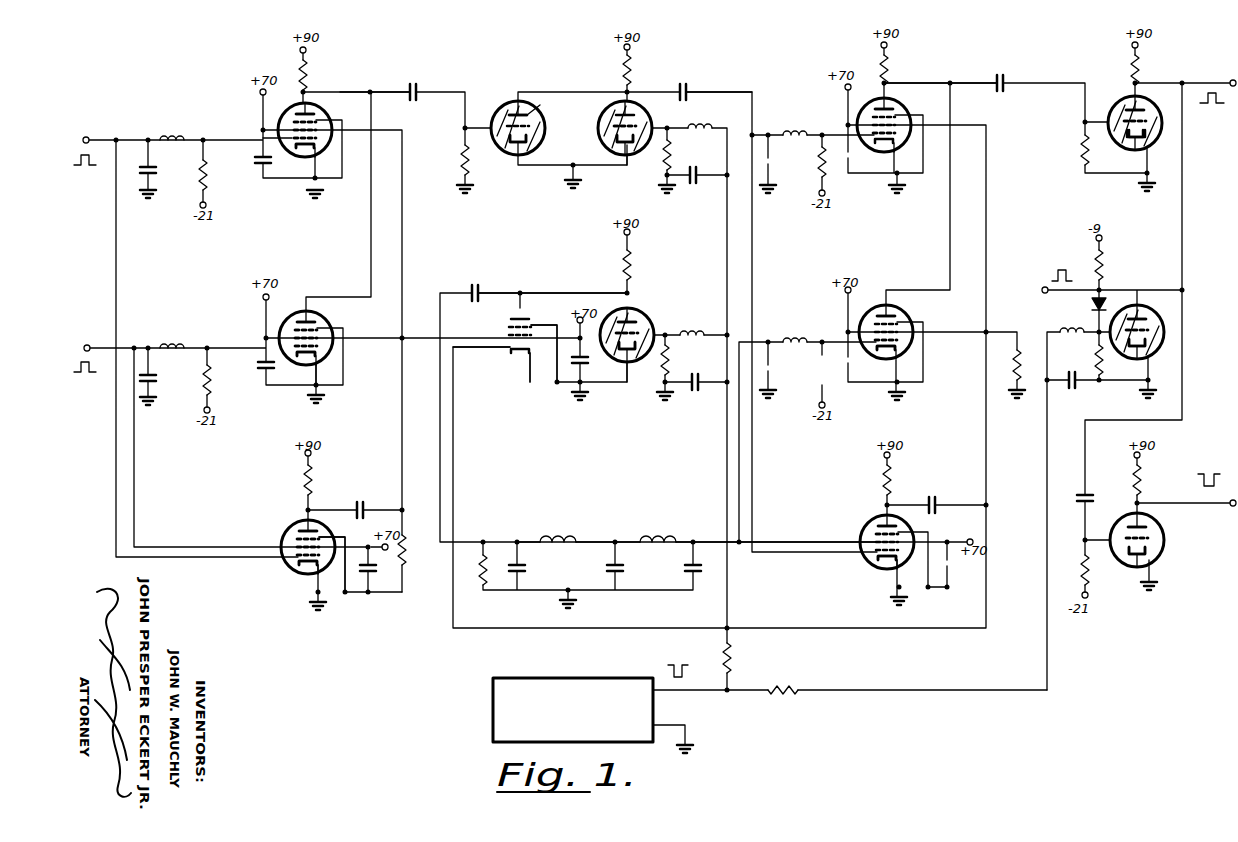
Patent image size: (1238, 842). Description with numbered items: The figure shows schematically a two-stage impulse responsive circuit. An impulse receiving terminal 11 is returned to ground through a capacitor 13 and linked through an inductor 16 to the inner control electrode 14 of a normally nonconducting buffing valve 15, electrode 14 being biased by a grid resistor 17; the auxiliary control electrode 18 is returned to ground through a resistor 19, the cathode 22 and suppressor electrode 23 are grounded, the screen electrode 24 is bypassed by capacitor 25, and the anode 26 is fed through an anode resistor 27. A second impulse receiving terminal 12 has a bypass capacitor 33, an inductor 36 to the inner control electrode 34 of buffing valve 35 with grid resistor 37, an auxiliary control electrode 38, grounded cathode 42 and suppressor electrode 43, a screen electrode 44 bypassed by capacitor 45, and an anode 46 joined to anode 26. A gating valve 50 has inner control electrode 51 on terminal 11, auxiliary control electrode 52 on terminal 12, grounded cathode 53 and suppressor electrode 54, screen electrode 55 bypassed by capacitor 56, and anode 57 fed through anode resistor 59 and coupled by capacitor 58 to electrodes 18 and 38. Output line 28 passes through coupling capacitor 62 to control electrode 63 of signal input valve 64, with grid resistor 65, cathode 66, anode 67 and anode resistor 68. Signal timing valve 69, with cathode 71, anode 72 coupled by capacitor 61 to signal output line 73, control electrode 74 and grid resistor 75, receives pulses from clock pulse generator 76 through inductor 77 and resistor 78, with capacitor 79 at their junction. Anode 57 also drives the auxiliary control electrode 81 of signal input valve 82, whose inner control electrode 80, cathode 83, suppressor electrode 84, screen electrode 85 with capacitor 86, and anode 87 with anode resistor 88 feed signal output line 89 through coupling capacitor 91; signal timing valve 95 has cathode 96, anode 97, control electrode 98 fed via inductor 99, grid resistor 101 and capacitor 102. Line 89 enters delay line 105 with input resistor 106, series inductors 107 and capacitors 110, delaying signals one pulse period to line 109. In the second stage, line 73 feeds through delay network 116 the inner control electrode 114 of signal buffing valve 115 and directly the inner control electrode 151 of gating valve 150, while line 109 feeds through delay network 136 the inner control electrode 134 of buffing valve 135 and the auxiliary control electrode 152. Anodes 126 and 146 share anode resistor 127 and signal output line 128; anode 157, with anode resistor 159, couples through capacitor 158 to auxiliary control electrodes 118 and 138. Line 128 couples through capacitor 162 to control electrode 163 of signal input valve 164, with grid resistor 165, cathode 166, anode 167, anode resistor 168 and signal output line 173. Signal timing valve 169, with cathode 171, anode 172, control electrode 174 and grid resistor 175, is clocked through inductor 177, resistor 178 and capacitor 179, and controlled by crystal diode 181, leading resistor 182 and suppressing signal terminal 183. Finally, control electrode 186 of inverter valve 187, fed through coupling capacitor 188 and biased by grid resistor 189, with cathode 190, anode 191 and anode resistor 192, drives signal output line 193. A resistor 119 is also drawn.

The impulse receiving terminal 11 is at (89, 135).
The impulse receiving terminal 12 is at (94, 340).
The capacitor 13 is at (156, 175).
The inner control electrode 14 is at (284, 146).
The buffing valve 15 is at (299, 103).
The inductor 16 is at (176, 135).
The grid resistor 17 is at (207, 166).
The auxiliary control electrode 18 is at (314, 142).
The resistor 19 is at (409, 560).
The cathode 22 is at (303, 158).
The suppressor electrode 23 is at (322, 121).
The screen electrode 24 is at (287, 119).
The bypass capacitor 25 is at (262, 170).
The anode 26 is at (313, 113).
The anode resistor 27 is at (311, 66).
The output line 28 is at (371, 91).
The bypass capacitor 33 is at (156, 392).
The inner control electrode 34 is at (291, 360).
The buffing valve 35 is at (301, 310).
The inductor 36 is at (176, 343).
The grid resistor 37 is at (211, 390).
The auxiliary control electrode 38 is at (316, 350).
The cathode 42 is at (312, 364).
The suppressor electrode 43 is at (331, 323).
The screen electrode 44 is at (291, 325).
The bypass capacitor 45 is at (262, 361).
The anode 46 is at (313, 318).
The gating valve 50 is at (286, 526).
The inner control electrode 51 is at (286, 561).
The auxiliary control electrode 52 is at (286, 540).
The cathode 53 is at (303, 576).
The suppressor electrode 54 is at (321, 536).
The screen electrode 55 is at (326, 553).
The bypass capacitor 56 is at (371, 578).
The anode 57 is at (301, 521).
The coupling capacitor 58 is at (366, 505).
The anode resistor 59 is at (313, 480).
The coupling capacitor 61 is at (690, 82).
The coupling capacitor 62 is at (419, 86).
The control electrode 63 is at (498, 112).
The signal input valve 64 is at (540, 115).
The grid resistor 65 is at (470, 168).
The cathode 66 is at (525, 160).
The anode 67 is at (518, 105).
The anode resistor 68 is at (636, 67).
The signal timing valve 69 is at (641, 118).
The cathode 71 is at (626, 158).
The anode 72 is at (603, 124).
The signal output line 73 is at (714, 90).
The control electrode 74 is at (639, 146).
The grid resistor 75 is at (673, 155).
The clock pulse generator 76 is at (595, 677).
The inductor 77 is at (701, 124).
The resistor 78 is at (736, 656).
The capacitor 79 is at (695, 185).
The inner control electrode 80 is at (505, 347).
The auxiliary control electrode 81 is at (501, 333).
The signal input valve 82 is at (506, 360).
The cathode 83 is at (524, 360).
The suppressor electrode 84 is at (536, 322).
The screen electrode 85 is at (541, 346).
The coupling capacitor 86 is at (586, 365).
The anode 87 is at (512, 325).
The anode resistor 88 is at (632, 265).
The signal output line 89 is at (446, 293).
The coupling capacitor 91 is at (483, 288).
The signal timing valve 95 is at (651, 320).
The cathode 96 is at (630, 366).
The anode 97 is at (636, 315).
The control electrode 98 is at (640, 360).
The inductor 99 is at (696, 333).
The grid resistor 101 is at (672, 362).
The capacitor 102 is at (698, 392).
The delay line 105 is at (585, 528).
The input resistor 106 is at (481, 580).
The series inductors 107 is at (652, 537).
The line 109 is at (701, 540).
The capacitors 110 is at (528, 574).
The inner control electrode 114 is at (852, 152).
The signal buffing valve 115 is at (869, 110).
The delay network 116 is at (810, 125).
The auxiliary control electrode 118 is at (900, 137).
The resistor 119 is at (1017, 345).
The anode 126 is at (899, 106).
The anode resistor 127 is at (892, 66).
The signal output line 128 is at (956, 82).
The inner control electrode 134 is at (866, 352).
The buffing valve 135 is at (871, 316).
The delay network 136 is at (813, 326).
The auxiliary control electrode 138 is at (900, 346).
The anode 146 is at (902, 313).
The gating valve 150 is at (873, 515).
The inner control electrode 151 is at (876, 557).
The auxiliary control electrode 152 is at (871, 535).
The anode 157 is at (906, 523).
The coupling capacitor 158 is at (938, 500).
The anode resistor 159 is at (893, 476).
The coupling capacitor 162 is at (1004, 82).
The control electrode 163 is at (1115, 115).
The signal input valve 164 is at (1143, 141).
The grid resistor 165 is at (1083, 146).
The cathode 166 is at (1129, 148).
The anode 167 is at (1125, 100).
The anode resistor 168 is at (1143, 66).
The signal timing valve 169 is at (1157, 311).
The cathode 171 is at (1130, 355).
The anode 172 is at (1137, 300).
The signal output line 173 is at (1202, 82).
The control electrode 174 is at (1116, 310).
The grid resistor 175 is at (1093, 362).
The inductor 177 is at (1066, 330).
The resistor 178 is at (792, 686).
The capacitor 179 is at (1076, 388).
The crystal diode 181 is at (1092, 304).
The leading resistor 182 is at (1105, 265).
The suppressing signal terminal 183 is at (1044, 287).
The control electrode 186 is at (1121, 528).
The inverter valve 187 is at (1161, 552).
The coupling capacitor 188 is at (1077, 496).
The grid resistor 189 is at (1084, 565).
The cathode 190 is at (1146, 570).
The anode 191 is at (1165, 530).
The anode resistor 192 is at (1146, 480).
The signal output line 193 is at (1200, 503).